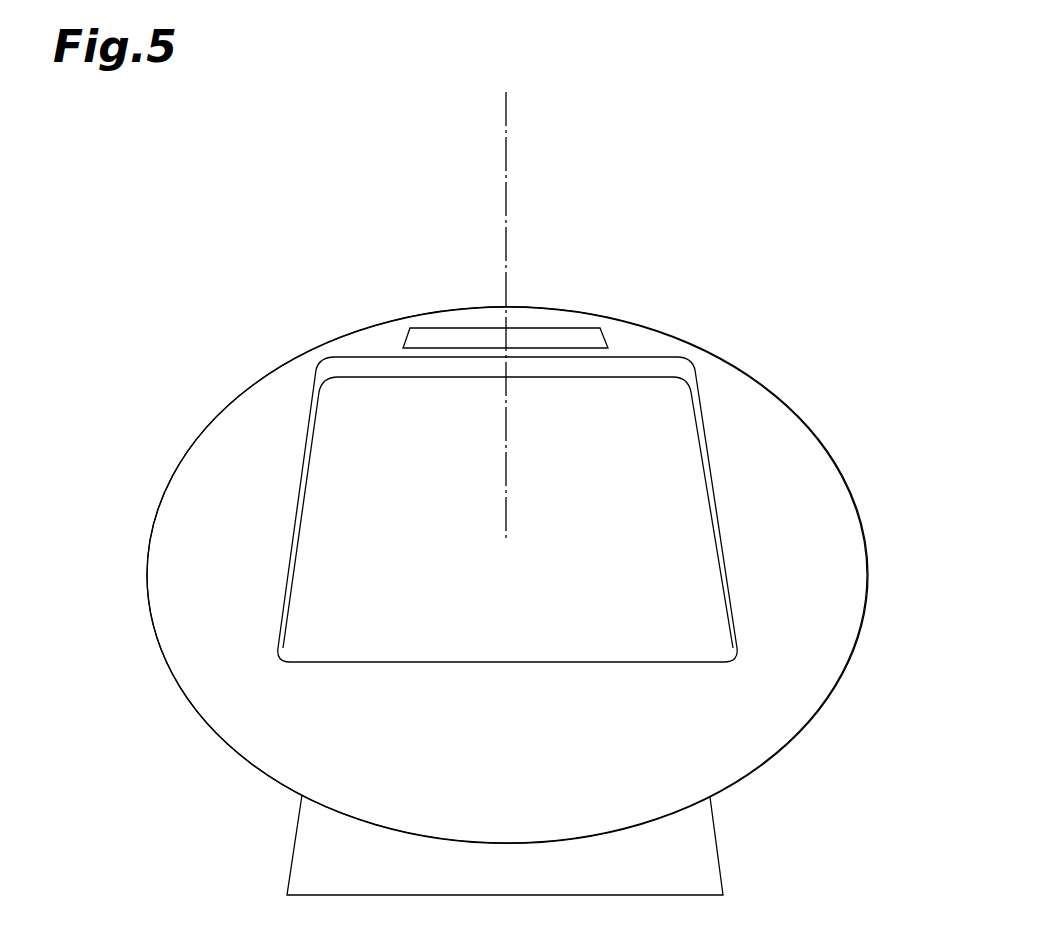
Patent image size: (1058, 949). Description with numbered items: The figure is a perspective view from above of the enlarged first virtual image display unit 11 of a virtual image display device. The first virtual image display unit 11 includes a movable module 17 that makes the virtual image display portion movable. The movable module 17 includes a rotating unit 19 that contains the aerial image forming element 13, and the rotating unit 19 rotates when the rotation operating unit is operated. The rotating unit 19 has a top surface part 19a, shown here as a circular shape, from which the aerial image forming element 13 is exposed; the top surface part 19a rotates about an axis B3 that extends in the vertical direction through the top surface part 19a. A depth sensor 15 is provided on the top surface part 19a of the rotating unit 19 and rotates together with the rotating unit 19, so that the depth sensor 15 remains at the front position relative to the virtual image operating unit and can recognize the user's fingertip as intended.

The first virtual image display unit 11 is at (790, 290).
The aerial image forming element 13 is at (630, 513).
The depth sensor 15 is at (428, 337).
The movable module 17 is at (888, 607).
The rotating unit 19 is at (223, 400).
The top surface part 19a is at (293, 720).
The axis B3 is at (507, 223).